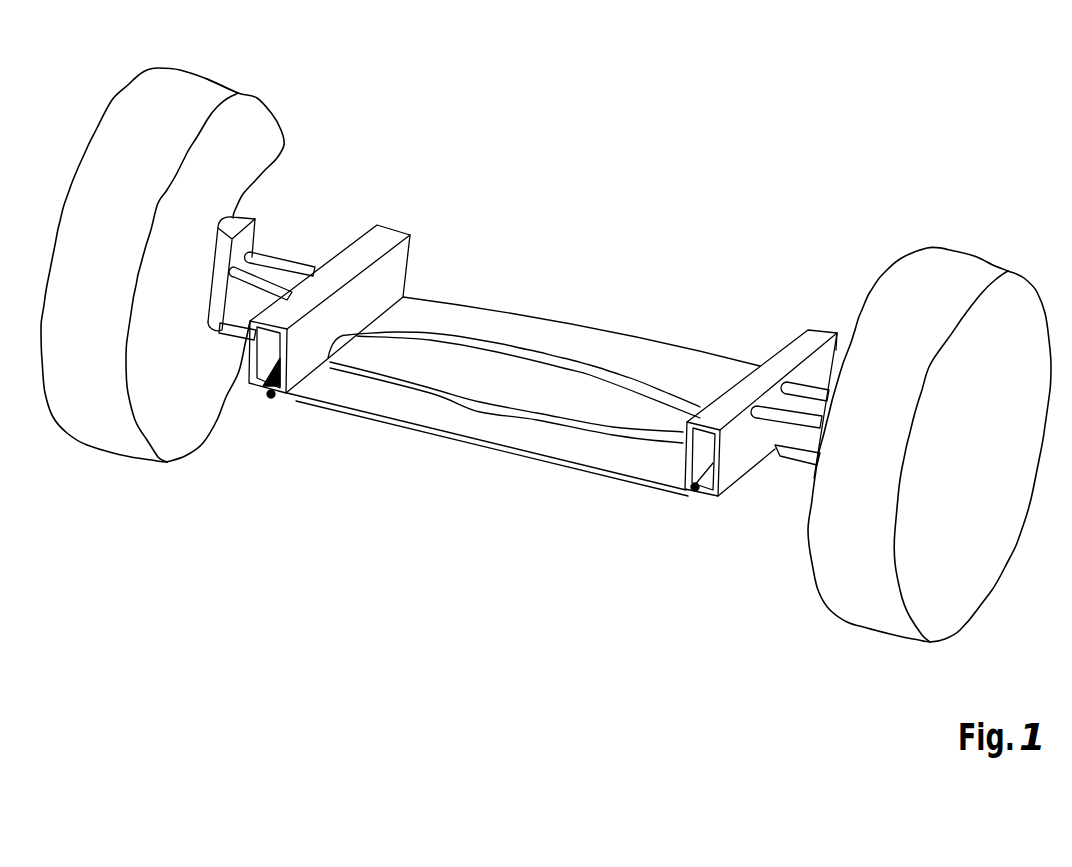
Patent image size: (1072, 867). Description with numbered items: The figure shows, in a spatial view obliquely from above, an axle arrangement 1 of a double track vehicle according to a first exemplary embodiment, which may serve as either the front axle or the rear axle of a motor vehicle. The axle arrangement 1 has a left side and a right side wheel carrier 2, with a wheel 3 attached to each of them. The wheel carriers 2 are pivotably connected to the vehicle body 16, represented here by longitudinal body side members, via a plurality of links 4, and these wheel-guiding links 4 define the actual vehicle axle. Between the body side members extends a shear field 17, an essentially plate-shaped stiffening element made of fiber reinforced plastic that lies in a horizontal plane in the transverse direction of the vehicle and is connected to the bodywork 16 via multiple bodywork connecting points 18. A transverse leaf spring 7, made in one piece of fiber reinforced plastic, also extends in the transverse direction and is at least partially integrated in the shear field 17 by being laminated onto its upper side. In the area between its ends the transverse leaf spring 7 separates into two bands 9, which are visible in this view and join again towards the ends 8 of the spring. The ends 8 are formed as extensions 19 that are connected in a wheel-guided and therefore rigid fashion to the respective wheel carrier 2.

The axle arrangement 1 is at (587, 211).
The wheel carrier 2 is at (250, 292).
The wheel 3 is at (129, 117).
The link 4 is at (257, 285).
The transverse leaf spring 7 is at (523, 398).
The end of the transverse leaf spring 8 is at (252, 338).
The band 9 is at (553, 358).
The vehicle body 16 is at (397, 262).
The shear field 17 is at (467, 324).
The bodywork connecting point 18 is at (264, 392).
The extension 19 is at (776, 451).